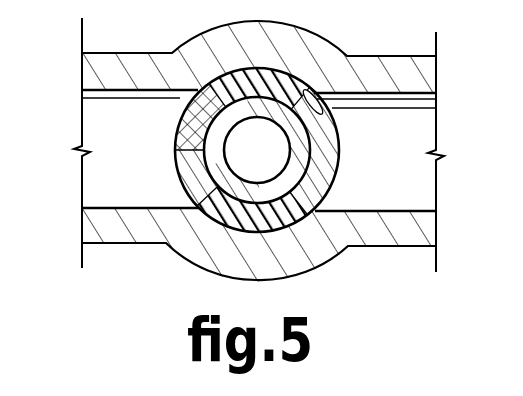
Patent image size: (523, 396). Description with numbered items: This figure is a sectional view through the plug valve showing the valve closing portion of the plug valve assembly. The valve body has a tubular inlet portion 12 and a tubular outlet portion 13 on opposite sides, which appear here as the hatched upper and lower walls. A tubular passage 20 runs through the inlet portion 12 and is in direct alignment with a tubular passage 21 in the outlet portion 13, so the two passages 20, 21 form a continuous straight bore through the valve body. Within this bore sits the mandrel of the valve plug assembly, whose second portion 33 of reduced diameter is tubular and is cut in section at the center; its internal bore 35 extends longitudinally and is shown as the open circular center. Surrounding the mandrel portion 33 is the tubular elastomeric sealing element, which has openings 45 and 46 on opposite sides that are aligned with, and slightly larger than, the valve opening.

The tubular inlet portion 12 is at (125, 53).
The tubular outlet portion 13 is at (385, 56).
The tubular passage 20 is at (97, 207).
The tubular passage 21 is at (416, 210).
The second portion of reduced diameter 33 is at (213, 162).
The internal bore 35 is at (288, 146).
The opening 45 is at (185, 126).
The opening 46 is at (331, 119).